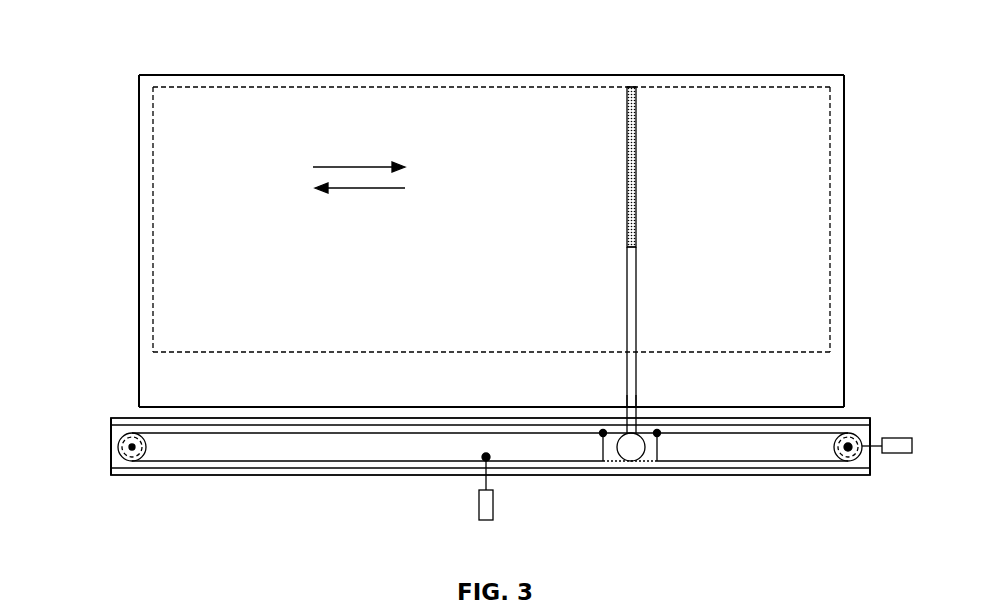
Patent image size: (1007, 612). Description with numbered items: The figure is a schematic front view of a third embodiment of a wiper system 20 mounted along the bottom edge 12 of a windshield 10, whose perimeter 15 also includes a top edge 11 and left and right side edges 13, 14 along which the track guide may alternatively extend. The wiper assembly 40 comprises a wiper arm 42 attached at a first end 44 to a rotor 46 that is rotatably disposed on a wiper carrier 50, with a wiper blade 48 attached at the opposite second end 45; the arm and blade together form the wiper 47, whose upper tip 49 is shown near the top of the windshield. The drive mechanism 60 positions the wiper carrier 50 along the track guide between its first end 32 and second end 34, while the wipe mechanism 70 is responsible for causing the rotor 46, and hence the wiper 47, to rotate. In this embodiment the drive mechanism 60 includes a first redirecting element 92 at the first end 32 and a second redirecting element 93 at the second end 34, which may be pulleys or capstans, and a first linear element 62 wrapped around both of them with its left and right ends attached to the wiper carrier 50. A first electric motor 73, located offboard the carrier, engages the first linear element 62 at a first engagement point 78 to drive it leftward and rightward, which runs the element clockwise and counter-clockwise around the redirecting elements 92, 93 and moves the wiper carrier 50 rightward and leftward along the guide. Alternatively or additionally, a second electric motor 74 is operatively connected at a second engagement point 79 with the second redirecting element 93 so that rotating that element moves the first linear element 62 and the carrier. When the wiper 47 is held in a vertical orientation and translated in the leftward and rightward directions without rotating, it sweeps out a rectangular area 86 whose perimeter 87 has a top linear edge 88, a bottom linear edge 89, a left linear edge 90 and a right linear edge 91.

The windshield 10 is at (139, 138).
The top edge 11 is at (565, 75).
The bottom edge 12 is at (347, 407).
The edge 13 is at (139, 222).
The edge 14 is at (844, 160).
The perimeter 15 is at (493, 267).
The wiper system 20 is at (840, 38).
The first end of the track guide 32 is at (110, 434).
The second end of the track guide 34 is at (870, 430).
The wiper assembly 40 is at (713, 325).
The wiper arm 42 is at (627, 300).
The first end of the wiper arm 44 is at (622, 407).
The second end of the wiper arm 45 is at (636, 248).
The rotor 46 is at (632, 448).
The wiper 47 is at (748, 182).
The wiper blade 48 is at (627, 174).
The wiper blade upper end 49 is at (636, 88).
The wiper carrier 50 is at (648, 407).
The drive mechanism 60 is at (912, 305).
The first linear element 62 is at (332, 500).
The wipe mechanism 70 is at (495, 452).
The first electric motor 73 is at (480, 508).
The second electric motor 74 is at (897, 453).
The first engagement point 78 is at (486, 455).
The second engagement point 79 is at (850, 452).
The rectangular area 86 is at (275, 108).
The perimeter 87 is at (493, 203).
The top linear edge 88 is at (425, 85).
The bottom linear edge 89 is at (358, 355).
The left linear edge 90 is at (153, 287).
The right linear edge 91 is at (830, 235).
The first redirecting element 92 is at (142, 446).
The second redirecting element 93 is at (840, 447).